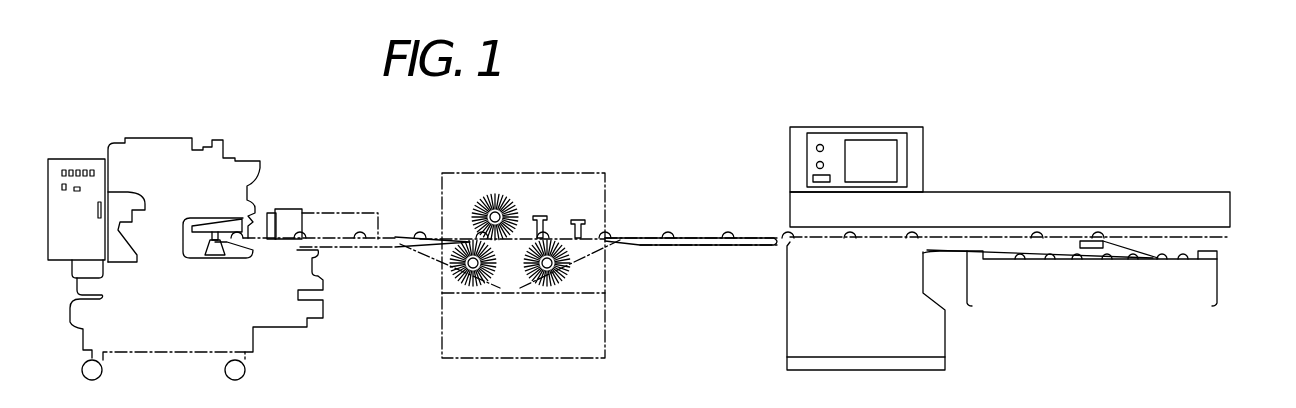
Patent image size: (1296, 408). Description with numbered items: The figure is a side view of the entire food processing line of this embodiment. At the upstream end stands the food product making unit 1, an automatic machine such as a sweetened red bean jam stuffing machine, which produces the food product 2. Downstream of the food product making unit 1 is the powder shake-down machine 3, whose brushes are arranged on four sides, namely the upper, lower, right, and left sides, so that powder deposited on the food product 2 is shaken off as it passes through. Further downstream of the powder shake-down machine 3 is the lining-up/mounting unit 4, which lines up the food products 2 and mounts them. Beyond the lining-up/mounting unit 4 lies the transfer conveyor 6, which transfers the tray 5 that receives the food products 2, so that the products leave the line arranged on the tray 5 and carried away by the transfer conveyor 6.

The food product making unit 1 is at (160, 138).
The food product 2 is at (418, 234).
The powder shake-down machine 3 is at (550, 185).
The lining-up/mounting unit 4 is at (901, 127).
The tray 5 is at (1183, 259).
The transfer conveyor 6 is at (1220, 257).